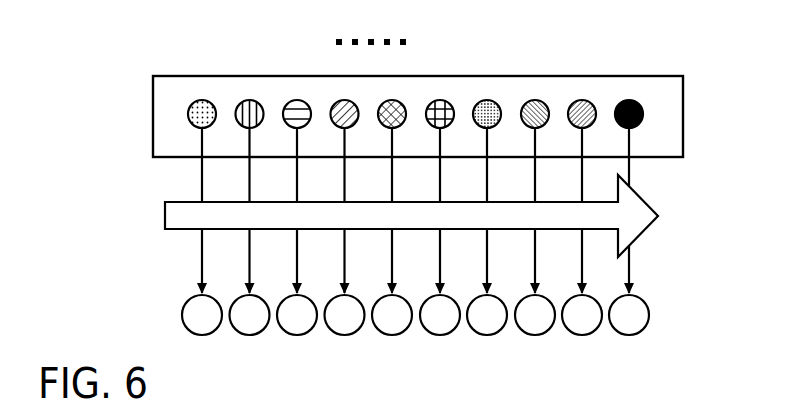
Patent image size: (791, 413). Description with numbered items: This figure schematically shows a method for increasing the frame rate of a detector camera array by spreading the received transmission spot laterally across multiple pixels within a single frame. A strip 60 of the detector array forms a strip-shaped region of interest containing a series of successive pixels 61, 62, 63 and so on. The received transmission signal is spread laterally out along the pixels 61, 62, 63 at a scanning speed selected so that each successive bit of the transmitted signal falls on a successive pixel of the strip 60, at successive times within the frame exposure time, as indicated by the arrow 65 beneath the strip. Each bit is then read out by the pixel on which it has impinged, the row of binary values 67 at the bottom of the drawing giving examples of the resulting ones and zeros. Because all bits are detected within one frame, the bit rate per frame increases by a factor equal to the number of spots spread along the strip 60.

The strip of the detector array 60 is at (684, 114).
The first pixel of the strip 61 is at (202, 100).
The second pixel of the strip 62 is at (250, 100).
The third pixel of the strip 63 is at (297, 100).
The arrow 65 is at (431, 216).
The bit sequence 67 is at (653, 318).